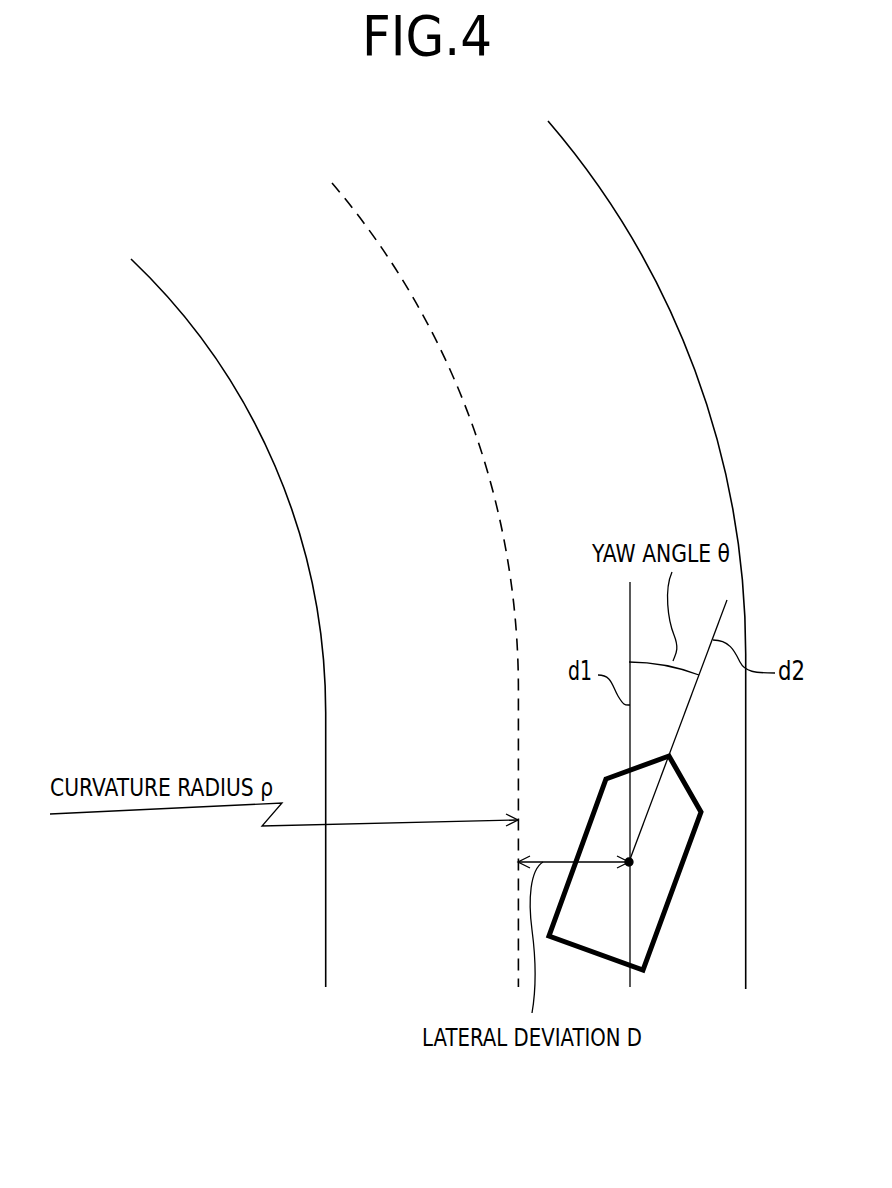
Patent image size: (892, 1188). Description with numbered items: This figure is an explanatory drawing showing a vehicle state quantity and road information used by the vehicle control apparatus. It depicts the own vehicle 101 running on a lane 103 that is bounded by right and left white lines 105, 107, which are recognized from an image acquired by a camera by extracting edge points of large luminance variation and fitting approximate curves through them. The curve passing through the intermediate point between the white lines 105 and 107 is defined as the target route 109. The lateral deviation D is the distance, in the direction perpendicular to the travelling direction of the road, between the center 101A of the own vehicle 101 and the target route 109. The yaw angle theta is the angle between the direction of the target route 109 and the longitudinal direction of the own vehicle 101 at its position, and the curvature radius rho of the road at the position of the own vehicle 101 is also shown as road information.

The own vehicle 101 is at (689, 860).
The center of the own vehicle 101A is at (633, 866).
The lane 103 is at (577, 261).
The white line 105 is at (243, 400).
The white line 107 is at (675, 321).
The target route 109 is at (364, 212).